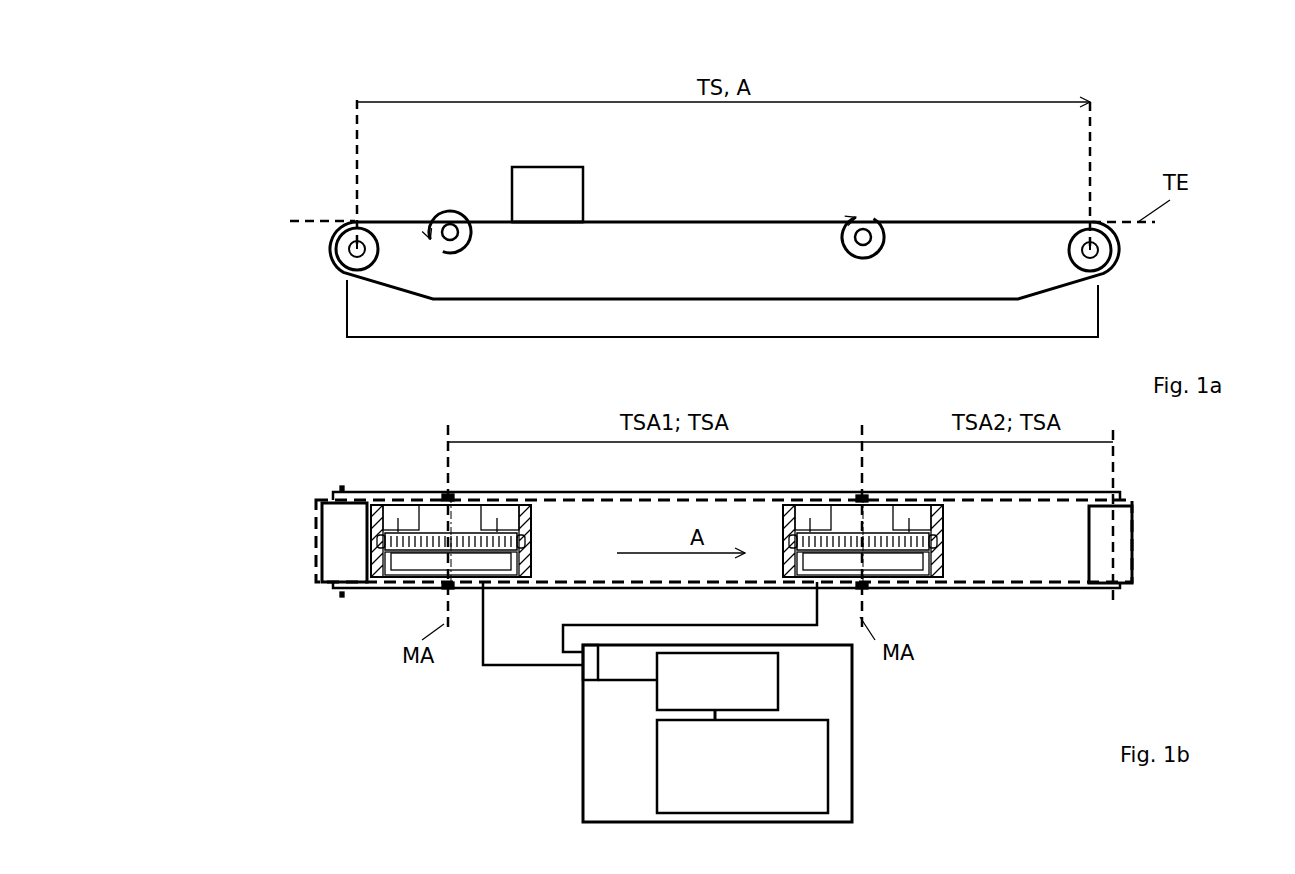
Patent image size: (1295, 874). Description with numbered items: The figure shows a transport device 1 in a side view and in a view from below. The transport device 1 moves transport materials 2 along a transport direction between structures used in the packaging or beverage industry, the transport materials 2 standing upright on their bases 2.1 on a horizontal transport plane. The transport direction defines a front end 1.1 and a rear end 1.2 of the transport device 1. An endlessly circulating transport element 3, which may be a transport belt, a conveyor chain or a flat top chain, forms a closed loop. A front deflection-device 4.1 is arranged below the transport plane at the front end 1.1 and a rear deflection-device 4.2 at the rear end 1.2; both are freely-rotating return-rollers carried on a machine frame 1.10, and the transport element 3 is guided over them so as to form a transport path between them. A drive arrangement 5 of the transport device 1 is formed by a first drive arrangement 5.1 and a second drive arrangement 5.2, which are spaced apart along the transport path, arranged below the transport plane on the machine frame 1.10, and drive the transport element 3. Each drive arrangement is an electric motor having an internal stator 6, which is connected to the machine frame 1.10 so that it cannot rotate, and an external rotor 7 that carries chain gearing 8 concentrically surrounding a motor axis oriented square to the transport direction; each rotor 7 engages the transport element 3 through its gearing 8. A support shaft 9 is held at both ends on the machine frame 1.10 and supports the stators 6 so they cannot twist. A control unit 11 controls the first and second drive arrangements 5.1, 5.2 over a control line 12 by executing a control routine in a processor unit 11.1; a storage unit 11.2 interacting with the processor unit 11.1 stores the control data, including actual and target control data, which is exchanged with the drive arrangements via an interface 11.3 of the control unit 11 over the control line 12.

In FIG. 1A, the transport device 1 is at (318, 92).
In FIG. 1B, the transport device 1 is at (268, 472).
In FIG. 1A, the front end 1.1 is at (300, 280).
In FIG. 1A, the rear end 1.2 is at (1133, 277).
In FIG. 1A, the machine frame 1.10 is at (372, 336).
In FIG. 1B, the machine frame 1.10 is at (980, 590).
In FIG. 1A, the transport materials 2 is at (527, 166).
In FIG. 1A, the base 2.1 is at (570, 220).
In FIG. 1A, the transport element 3 is at (992, 221).
In FIG. 1B, the transport element 3 is at (645, 515).
In FIG. 1A, the front deflection-device 4.1 is at (340, 250).
In FIG. 1B, the front deflection-device 4.1 is at (333, 533).
In FIG. 1A, the rear deflection-device 4.2 is at (1115, 257).
In FIG. 1B, the rear deflection-device 4.2 is at (1115, 558).
In FIG. 1A, the drive arrangement 5 is at (639, 201).
In FIG. 1B, the drive arrangement 5 is at (683, 575).
In FIG. 1A, the first drive arrangement 5.1 is at (430, 197).
In FIG. 1B, the first drive arrangement 5.1 is at (424, 486).
In FIG. 1A, the second drive arrangement 5.2 is at (830, 214).
In FIG. 1B, the second drive arrangement 5.2 is at (909, 597).
In FIG. 1B, the internal stator 6 is at (458, 517).
In FIG. 1B, the external rotor 7 is at (403, 563).
In FIG. 1B, the chain gearing 8 is at (503, 532).
In FIG. 1B, the support shaft 9 is at (452, 495).
In FIG. 1B, the control unit 11 is at (862, 762).
In FIG. 1B, the processor unit 11.1 is at (660, 693).
In FIG. 1B, the storage unit 11.2 is at (670, 796).
In FIG. 1B, the interface 11.3 is at (588, 665).
In FIG. 1B, the control line 12 is at (567, 635).